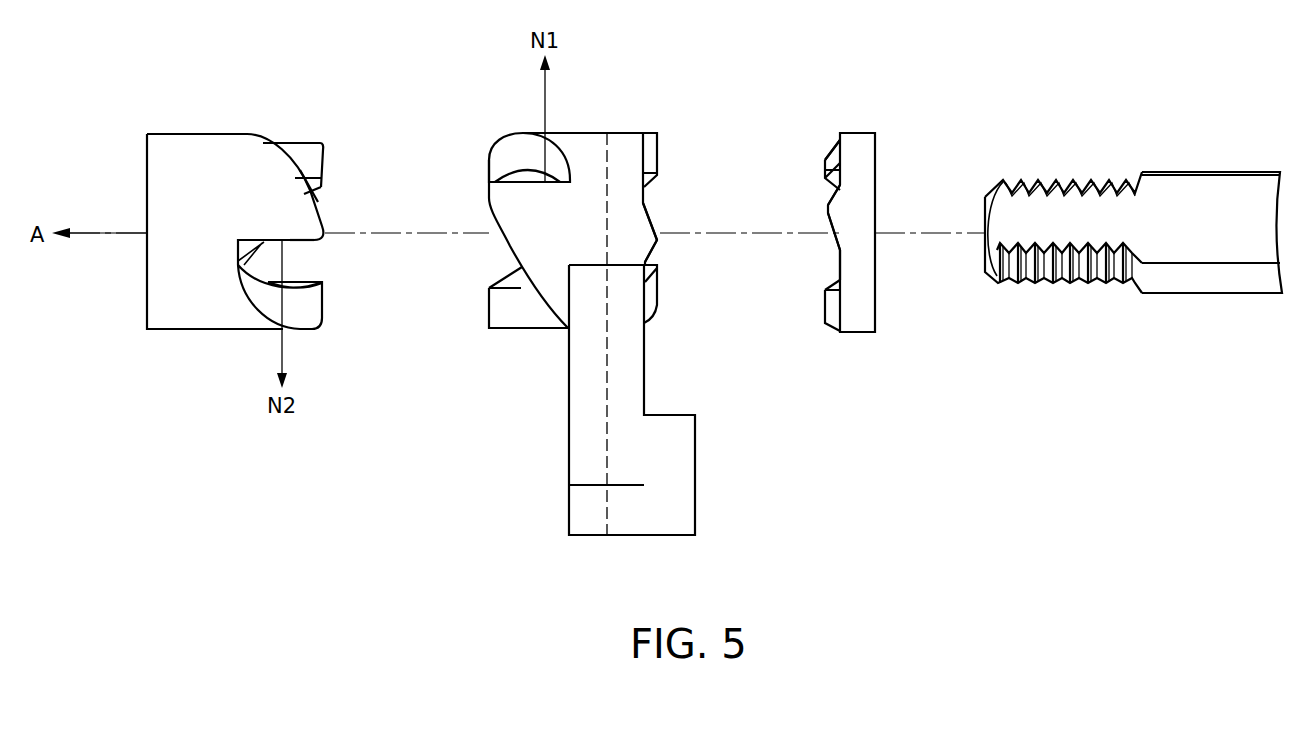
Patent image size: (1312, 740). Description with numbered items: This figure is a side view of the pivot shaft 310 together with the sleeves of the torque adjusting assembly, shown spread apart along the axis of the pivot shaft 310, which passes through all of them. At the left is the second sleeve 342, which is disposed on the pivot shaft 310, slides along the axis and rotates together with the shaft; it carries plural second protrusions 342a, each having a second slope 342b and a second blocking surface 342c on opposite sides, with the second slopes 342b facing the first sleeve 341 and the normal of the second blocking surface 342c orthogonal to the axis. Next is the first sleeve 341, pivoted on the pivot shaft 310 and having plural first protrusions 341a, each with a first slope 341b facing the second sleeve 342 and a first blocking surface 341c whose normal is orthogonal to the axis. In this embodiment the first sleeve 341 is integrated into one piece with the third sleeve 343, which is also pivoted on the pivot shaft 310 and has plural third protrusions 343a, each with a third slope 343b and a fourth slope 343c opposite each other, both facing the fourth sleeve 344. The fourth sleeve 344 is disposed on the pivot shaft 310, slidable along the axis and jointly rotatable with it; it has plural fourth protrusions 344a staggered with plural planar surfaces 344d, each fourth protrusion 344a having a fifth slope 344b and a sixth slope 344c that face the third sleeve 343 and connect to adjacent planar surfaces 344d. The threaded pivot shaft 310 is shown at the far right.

The pivot shaft 310 is at (1200, 192).
The first sleeve 341 is at (506, 243).
The first protrusions 341a is at (512, 207).
The first slope 341b is at (500, 254).
The first blocking surface 341c is at (518, 173).
The second sleeve 342 is at (281, 229).
The second protrusions 342a is at (315, 153).
The second slope 342b is at (320, 198).
The second blocking surface 342c is at (306, 252).
The third sleeve 343 is at (662, 319).
The third protrusions 343a is at (653, 157).
The third slope 343b is at (664, 222).
The fourth slope 343c is at (660, 263).
The fourth sleeve 344 is at (850, 238).
The fourth protrusions 344a is at (830, 207).
The fifth slope 344b is at (825, 189).
The sixth slope 344c is at (825, 220).
The planar surfaces 344d is at (834, 143).